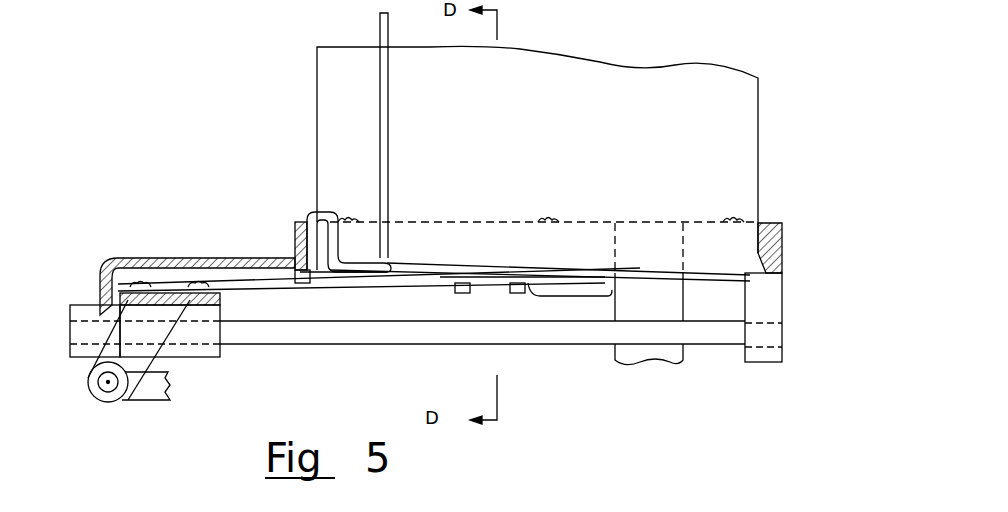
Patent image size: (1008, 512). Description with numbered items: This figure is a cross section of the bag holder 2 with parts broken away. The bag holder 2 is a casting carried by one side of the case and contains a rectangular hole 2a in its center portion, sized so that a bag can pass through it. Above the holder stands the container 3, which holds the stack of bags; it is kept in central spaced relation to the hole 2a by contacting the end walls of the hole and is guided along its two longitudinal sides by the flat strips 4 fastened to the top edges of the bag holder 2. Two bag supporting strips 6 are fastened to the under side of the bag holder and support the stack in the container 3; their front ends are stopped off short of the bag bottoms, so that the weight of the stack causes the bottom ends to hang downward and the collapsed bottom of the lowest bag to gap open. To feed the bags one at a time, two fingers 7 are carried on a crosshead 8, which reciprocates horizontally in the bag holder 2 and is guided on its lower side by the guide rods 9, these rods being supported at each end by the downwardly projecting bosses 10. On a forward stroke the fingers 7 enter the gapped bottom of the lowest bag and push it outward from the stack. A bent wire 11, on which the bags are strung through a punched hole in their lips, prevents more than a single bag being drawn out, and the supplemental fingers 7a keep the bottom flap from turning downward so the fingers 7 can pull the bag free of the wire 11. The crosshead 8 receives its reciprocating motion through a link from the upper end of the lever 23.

The bag holder 2 is at (294, 237).
The rectangular hole 2a is at (599, 248).
The container 3 is at (549, 159).
The flat strips 4 is at (432, 218).
The bag supporting strips 6 is at (333, 288).
The fingers 7 is at (413, 290).
The supplemental fingers 7a is at (560, 298).
The crosshead 8 is at (212, 316).
The guide rods 9 is at (482, 319).
The downwardly projecting bosses 10 is at (72, 320).
The bent wire 11 is at (388, 110).
The lever 23 is at (140, 395).